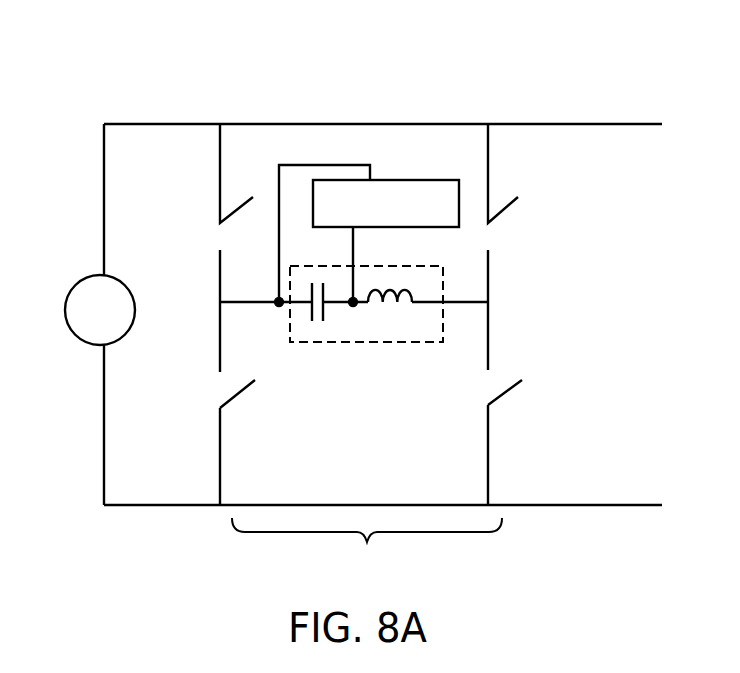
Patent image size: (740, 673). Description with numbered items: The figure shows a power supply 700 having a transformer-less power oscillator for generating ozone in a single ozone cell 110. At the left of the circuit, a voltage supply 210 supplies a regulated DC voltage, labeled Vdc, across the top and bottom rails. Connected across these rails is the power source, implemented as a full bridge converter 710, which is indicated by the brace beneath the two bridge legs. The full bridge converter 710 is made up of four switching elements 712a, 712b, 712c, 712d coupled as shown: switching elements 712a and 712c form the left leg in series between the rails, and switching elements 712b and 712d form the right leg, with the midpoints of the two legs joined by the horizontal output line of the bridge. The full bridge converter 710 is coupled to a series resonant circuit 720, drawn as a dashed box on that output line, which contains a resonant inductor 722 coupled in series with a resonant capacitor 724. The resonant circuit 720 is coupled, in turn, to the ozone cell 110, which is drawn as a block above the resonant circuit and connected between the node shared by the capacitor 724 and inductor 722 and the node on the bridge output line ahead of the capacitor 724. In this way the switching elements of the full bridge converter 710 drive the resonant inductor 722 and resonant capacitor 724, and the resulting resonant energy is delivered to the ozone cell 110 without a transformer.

The power supply 700 is at (509, 73).
The voltage supply 210 is at (88, 278).
The switching element 712a is at (218, 239).
The switching element 712b is at (491, 236).
The switching element 712c is at (220, 389).
The switching element 712d is at (487, 390).
The ozone cell 110 is at (418, 179).
The series resonant circuit 720 is at (398, 266).
The resonant capacitor 724 is at (318, 323).
The resonant inductor 722 is at (395, 305).
The full bridge converter 710 is at (367, 547).